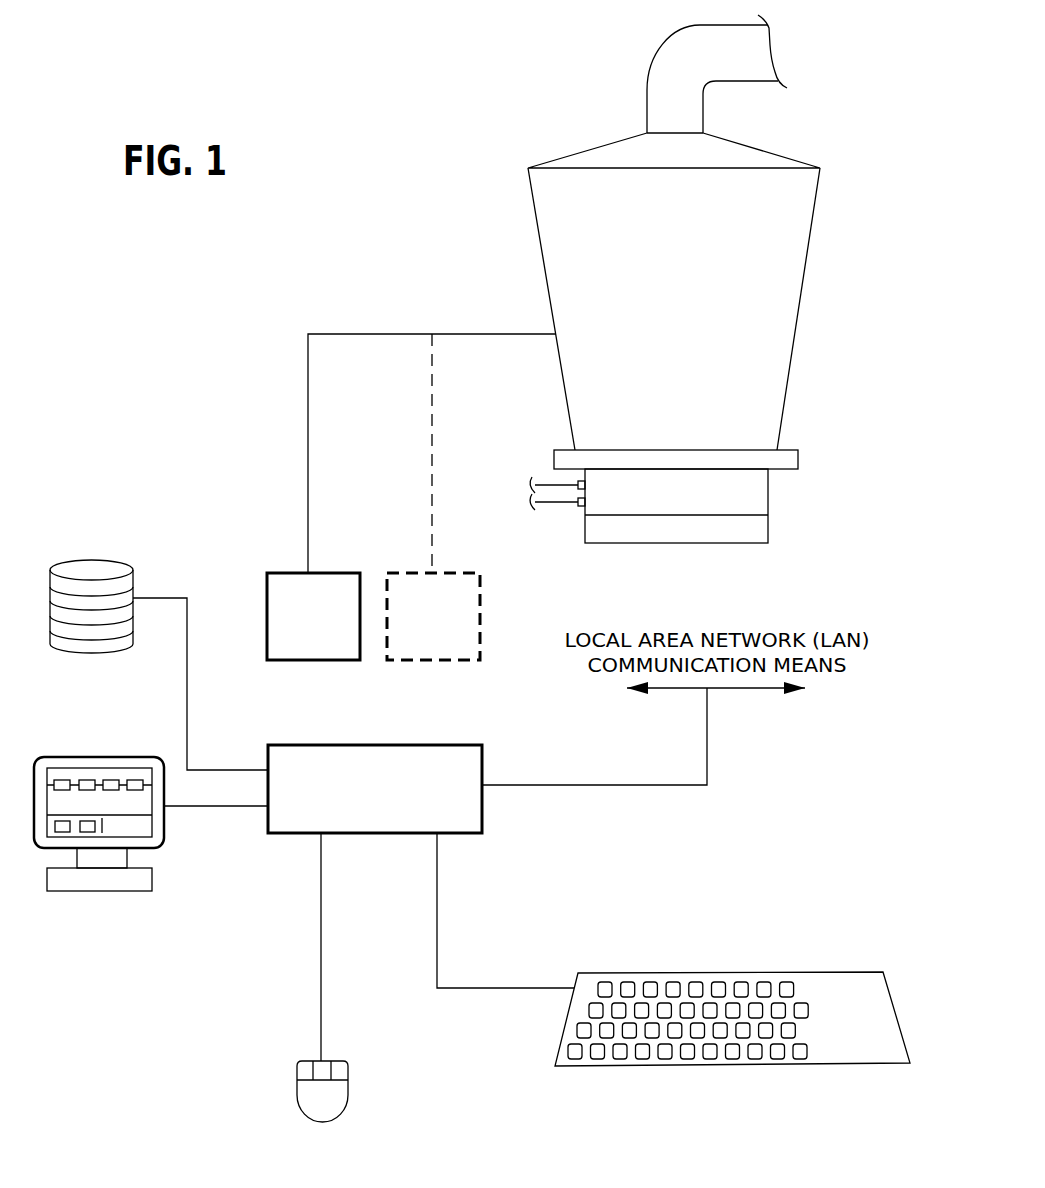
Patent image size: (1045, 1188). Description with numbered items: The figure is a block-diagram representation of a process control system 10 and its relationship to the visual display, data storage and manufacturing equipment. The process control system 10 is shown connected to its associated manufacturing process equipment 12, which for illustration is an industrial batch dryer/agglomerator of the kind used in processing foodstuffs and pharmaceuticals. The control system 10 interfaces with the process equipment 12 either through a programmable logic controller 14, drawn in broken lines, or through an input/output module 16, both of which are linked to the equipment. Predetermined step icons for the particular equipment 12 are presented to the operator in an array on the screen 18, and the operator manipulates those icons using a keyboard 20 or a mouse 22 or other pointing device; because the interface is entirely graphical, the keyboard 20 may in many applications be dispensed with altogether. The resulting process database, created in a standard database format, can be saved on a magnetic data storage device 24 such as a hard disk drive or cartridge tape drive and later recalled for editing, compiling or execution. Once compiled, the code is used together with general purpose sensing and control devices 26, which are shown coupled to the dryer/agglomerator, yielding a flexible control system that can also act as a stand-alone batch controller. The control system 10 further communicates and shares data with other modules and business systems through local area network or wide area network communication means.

The process control system 10 is at (500, 850).
The manufacturing process equipment 12 is at (798, 401).
The programmable logic controller 14 is at (480, 625).
The input/output module 16 is at (267, 592).
The screen 18 is at (97, 757).
The keyboard 20 is at (803, 973).
The mouse 22 is at (348, 1105).
The magnetic data storage device 24 is at (130, 575).
The general purpose sensing and control devices 26 is at (542, 523).